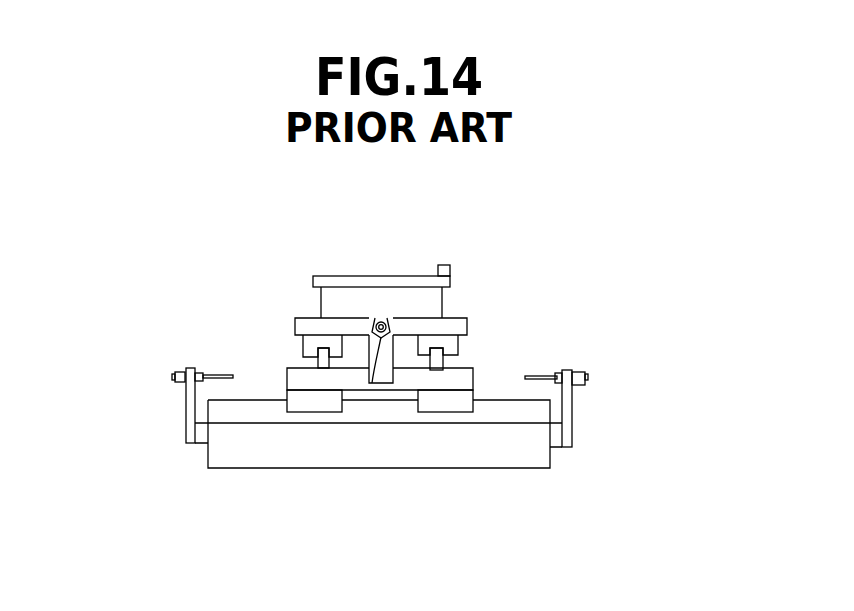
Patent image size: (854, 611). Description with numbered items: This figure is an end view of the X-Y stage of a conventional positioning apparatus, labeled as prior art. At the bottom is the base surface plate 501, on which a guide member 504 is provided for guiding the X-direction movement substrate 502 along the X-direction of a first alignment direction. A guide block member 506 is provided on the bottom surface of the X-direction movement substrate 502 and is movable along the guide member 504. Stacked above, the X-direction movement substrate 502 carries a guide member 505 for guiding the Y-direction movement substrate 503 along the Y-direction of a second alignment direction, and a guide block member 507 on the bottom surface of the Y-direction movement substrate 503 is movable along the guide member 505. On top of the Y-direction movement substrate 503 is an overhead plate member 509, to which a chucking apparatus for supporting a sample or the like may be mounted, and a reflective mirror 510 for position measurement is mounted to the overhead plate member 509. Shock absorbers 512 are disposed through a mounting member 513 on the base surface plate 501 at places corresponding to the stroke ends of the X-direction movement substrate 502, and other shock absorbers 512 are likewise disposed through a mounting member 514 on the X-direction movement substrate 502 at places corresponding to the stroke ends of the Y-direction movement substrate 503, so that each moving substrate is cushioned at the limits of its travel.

The base surface plate 501 is at (530, 452).
The X-direction movement substrate 502 is at (300, 380).
The Y-direction movement substrate 503 is at (467, 325).
The guide member 504 is at (538, 414).
The guide member 505 is at (318, 352).
The guide block member 506 is at (313, 407).
The guide block member 507 is at (318, 338).
The overhead plate member 509 is at (343, 280).
The reflective mirror 510 is at (450, 270).
The shock absorber 512 is at (175, 375).
The mounting member 513 is at (186, 413).
The mounting member 514 is at (387, 375).